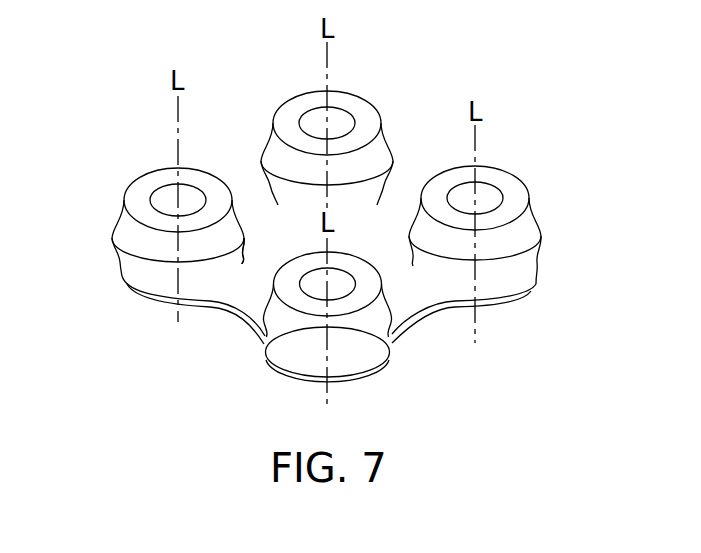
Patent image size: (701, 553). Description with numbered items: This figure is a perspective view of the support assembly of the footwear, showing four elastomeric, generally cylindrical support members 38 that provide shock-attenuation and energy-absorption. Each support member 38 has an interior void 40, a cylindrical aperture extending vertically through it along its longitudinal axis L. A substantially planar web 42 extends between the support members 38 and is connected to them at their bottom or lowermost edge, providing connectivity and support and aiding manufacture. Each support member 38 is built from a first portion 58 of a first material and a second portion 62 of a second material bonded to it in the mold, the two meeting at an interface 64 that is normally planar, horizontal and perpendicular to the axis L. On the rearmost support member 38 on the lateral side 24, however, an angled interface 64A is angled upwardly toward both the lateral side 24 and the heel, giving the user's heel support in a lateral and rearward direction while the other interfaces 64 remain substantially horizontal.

The lateral side 24 is at (525, 292).
The support member 38 is at (111, 224).
The interior void 40 is at (190, 208).
The web 42 is at (407, 290).
The first portion 58 is at (150, 268).
The second portion 62 is at (145, 187).
The interface 64 is at (200, 260).
The angled interface 64A is at (355, 330).